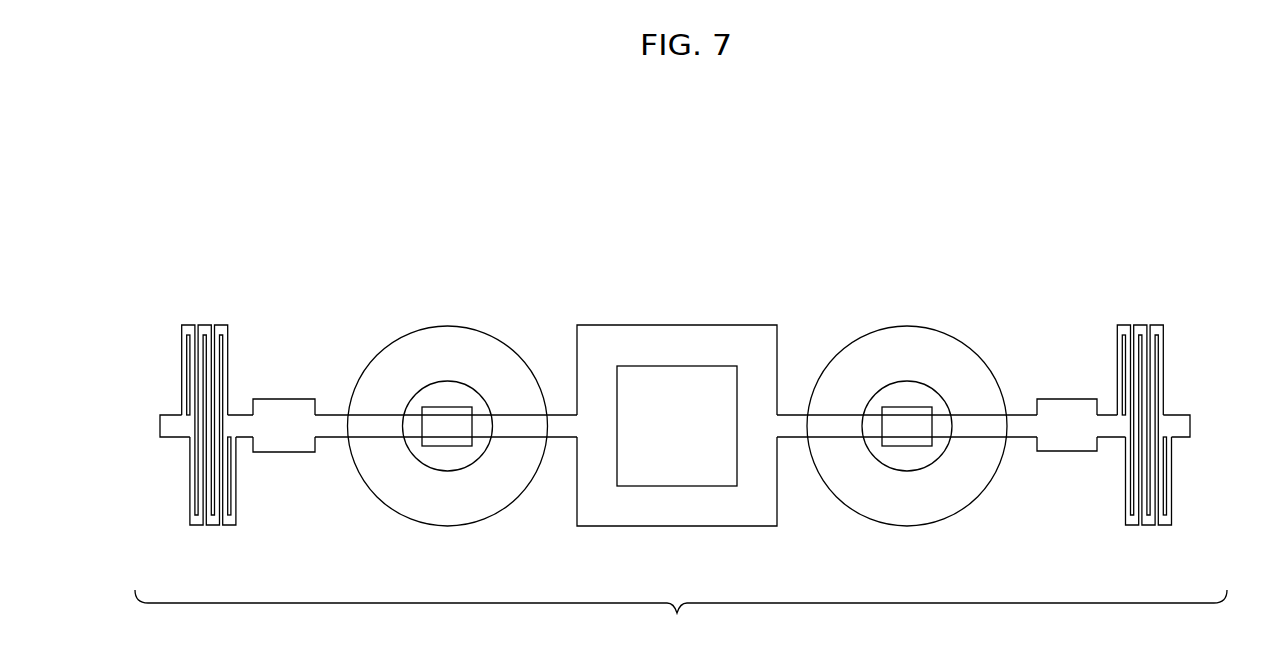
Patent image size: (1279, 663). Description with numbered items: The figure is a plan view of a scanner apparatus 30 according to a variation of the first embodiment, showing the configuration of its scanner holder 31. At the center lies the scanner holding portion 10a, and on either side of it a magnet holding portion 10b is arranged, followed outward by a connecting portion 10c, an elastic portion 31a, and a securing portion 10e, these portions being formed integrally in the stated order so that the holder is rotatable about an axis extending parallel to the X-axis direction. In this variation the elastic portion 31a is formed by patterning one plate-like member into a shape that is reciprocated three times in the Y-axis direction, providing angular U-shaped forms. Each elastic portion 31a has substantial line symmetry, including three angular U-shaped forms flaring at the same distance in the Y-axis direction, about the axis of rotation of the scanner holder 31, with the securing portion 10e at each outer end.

The scanner apparatus 30 is at (1211, 318).
The scanner holder 31 is at (681, 530).
The elastic portion 31a is at (214, 527).
The scanner holding portion 10a is at (640, 511).
The magnet holding portion 10b is at (511, 427).
The connecting portion 10c is at (285, 433).
The securing portion 10e is at (171, 430).